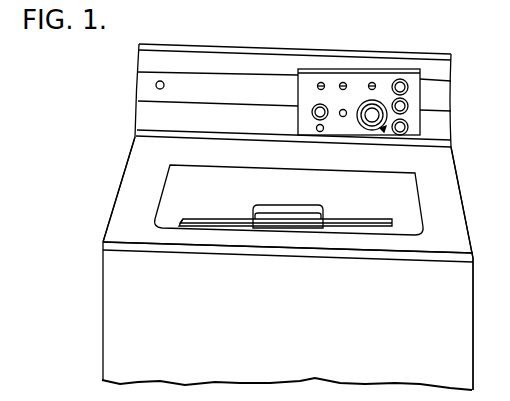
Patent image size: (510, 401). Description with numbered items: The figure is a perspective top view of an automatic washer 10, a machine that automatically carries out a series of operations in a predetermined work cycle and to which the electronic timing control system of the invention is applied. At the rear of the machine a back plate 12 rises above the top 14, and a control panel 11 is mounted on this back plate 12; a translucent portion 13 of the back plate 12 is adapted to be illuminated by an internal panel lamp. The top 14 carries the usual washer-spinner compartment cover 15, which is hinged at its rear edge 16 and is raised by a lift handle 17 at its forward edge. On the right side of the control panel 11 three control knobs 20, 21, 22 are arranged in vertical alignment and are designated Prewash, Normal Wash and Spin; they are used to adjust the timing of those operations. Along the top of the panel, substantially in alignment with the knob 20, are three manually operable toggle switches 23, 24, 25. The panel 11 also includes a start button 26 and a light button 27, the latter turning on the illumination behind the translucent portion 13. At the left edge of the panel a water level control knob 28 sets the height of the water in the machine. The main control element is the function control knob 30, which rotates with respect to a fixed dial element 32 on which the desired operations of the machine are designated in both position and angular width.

The automatic washer 10 is at (319, 33).
The control panel 11 is at (385, 80).
The back plate 12 is at (441, 70).
The translucent portion 13 is at (227, 82).
The top 14 is at (450, 216).
The washer-spinner compartment cover 15 is at (175, 203).
The rear edge 16 is at (226, 167).
The lift handle 17 is at (267, 205).
The control knob 20 is at (408, 88).
The control knob 21 is at (408, 107).
The control knob 22 is at (408, 128).
The toggle switch 23 is at (317, 86).
The toggle switch 24 is at (343, 82).
The toggle switch 25 is at (373, 82).
The start button 26 is at (344, 117).
The light button 27 is at (321, 131).
The water level control knob 28 is at (320, 117).
The function control knob 30 is at (371, 116).
The dial element 32 is at (383, 130).